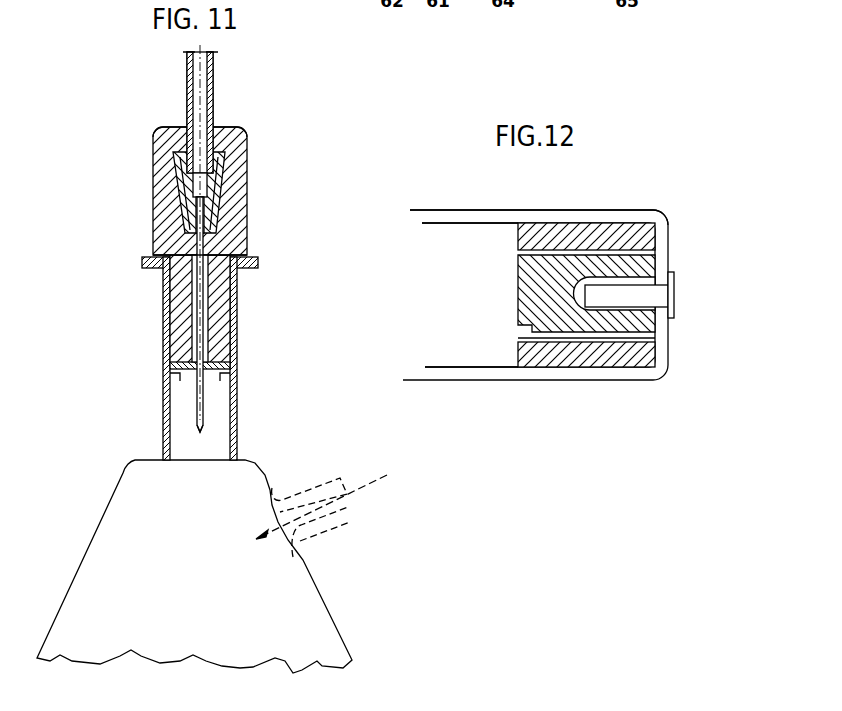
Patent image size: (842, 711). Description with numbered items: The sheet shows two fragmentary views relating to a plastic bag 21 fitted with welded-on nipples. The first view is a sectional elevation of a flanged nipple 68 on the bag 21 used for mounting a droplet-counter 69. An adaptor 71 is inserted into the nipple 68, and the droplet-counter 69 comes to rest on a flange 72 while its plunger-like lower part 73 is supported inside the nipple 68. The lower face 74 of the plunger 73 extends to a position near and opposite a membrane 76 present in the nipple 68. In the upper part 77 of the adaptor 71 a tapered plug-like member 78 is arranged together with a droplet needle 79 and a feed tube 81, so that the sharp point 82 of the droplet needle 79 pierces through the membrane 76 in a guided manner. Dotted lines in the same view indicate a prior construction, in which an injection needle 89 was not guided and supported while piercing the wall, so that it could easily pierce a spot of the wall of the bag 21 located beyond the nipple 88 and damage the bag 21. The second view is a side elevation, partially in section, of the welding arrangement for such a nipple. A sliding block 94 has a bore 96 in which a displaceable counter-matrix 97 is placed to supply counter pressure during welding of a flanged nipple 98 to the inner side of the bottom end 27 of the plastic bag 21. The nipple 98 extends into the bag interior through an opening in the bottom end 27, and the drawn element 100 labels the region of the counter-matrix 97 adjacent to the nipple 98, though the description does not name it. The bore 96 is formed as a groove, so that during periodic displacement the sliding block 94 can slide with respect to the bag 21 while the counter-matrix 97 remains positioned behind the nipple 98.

In FIG. 11, the bag 21 is at (90, 538).
In FIG. 12, the bag 21 is at (573, 210).
In FIG. 12, the bottom end 27 is at (668, 343).
In FIG. 11, the flanged nipple 68 is at (238, 395).
In FIG. 11, the droplet-counter 69 is at (142, 222).
In FIG. 11, the adaptor 71 is at (233, 225).
In FIG. 11, the flange 72 is at (255, 268).
In FIG. 11, the plunger-like lower part 73 is at (178, 300).
In FIG. 11, the lower face 74 is at (212, 355).
In FIG. 11, the membrane 76 is at (178, 378).
In FIG. 11, the upper part 77 is at (240, 147).
In FIG. 11, the tapered plug-like member 78 is at (172, 153).
In FIG. 11, the droplet needle 79 is at (197, 408).
In FIG. 11, the feed tube 81 is at (216, 80).
In FIG. 11, the sharp point 82 is at (201, 430).
In FIG. 11, the nipple 88 is at (327, 525).
In FIG. 11, the injection needle 89 is at (380, 488).
In FIG. 12, the sliding block 94 is at (470, 348).
In FIG. 12, the bore 96 is at (520, 325).
In FIG. 12, the counter-matrix 97 is at (612, 330).
In FIG. 12, the flanged nipple 98 is at (655, 295).
In FIG. 12, the slot 100 is at (633, 280).